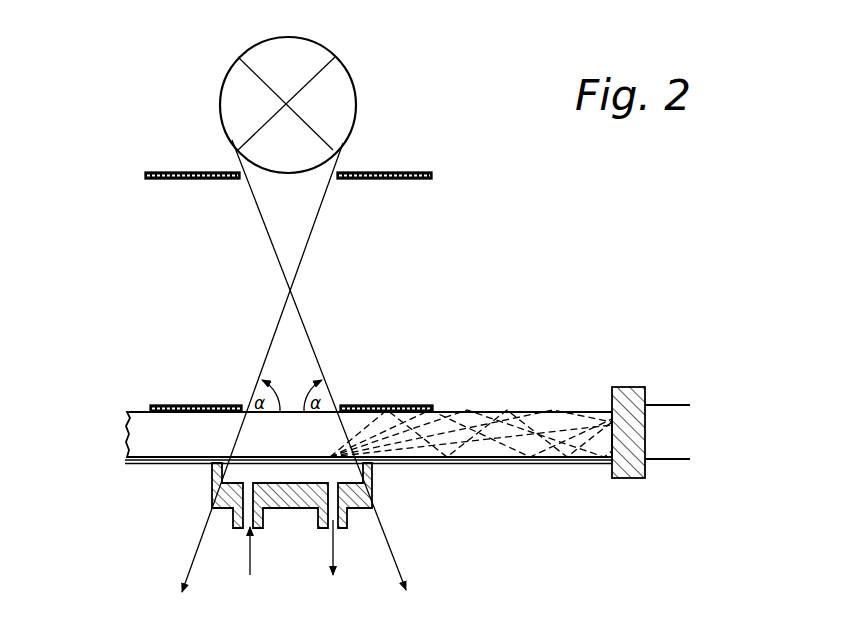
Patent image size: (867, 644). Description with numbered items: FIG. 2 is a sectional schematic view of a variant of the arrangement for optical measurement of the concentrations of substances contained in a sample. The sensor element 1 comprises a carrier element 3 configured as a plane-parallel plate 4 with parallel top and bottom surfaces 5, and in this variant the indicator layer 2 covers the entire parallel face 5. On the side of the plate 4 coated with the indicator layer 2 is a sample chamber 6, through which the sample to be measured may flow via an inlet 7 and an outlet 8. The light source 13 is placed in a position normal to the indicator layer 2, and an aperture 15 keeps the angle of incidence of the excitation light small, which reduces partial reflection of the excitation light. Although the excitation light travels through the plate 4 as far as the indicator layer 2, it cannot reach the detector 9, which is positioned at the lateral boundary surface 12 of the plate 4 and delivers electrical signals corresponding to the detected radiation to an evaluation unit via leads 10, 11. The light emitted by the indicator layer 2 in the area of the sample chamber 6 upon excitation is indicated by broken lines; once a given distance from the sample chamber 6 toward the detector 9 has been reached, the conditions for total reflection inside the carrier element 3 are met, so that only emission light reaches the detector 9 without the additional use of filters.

The sensor element 1 is at (192, 466).
The indicator layer 2 is at (177, 462).
The carrier element 3 is at (416, 448).
The plate 4 is at (143, 423).
The parallel surface 5 is at (478, 410).
The sample chamber 6 is at (282, 498).
The inlet 7 is at (245, 530).
The outlet 8 is at (339, 530).
The detector 9 is at (628, 390).
The lead 10 is at (690, 402).
The lead 11 is at (685, 461).
The lateral boundary surface 12 is at (600, 459).
The light source 13 is at (335, 113).
The aperture 15 is at (418, 172).